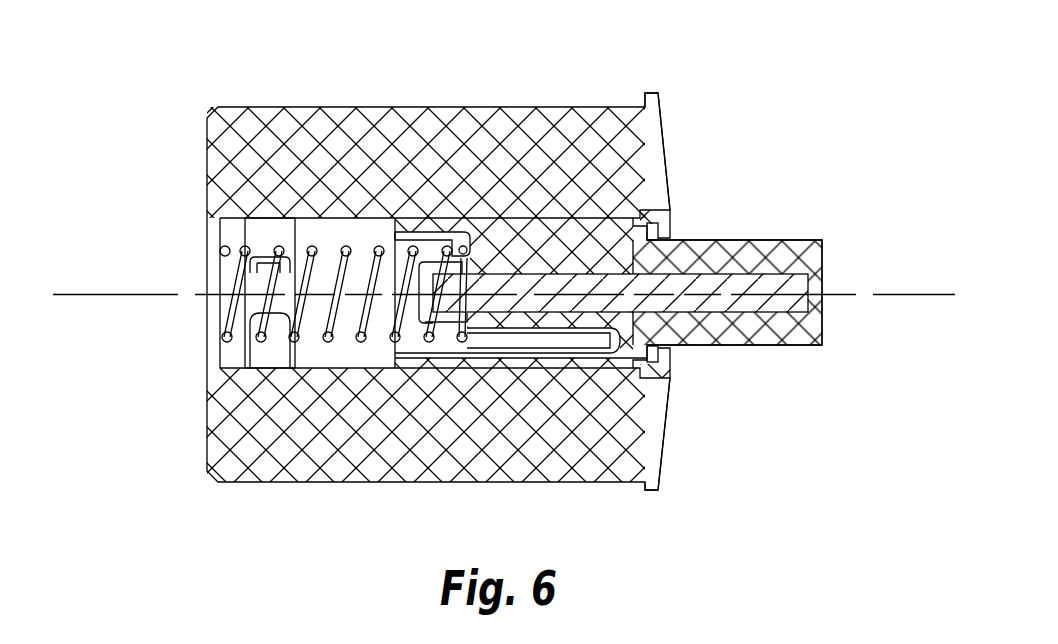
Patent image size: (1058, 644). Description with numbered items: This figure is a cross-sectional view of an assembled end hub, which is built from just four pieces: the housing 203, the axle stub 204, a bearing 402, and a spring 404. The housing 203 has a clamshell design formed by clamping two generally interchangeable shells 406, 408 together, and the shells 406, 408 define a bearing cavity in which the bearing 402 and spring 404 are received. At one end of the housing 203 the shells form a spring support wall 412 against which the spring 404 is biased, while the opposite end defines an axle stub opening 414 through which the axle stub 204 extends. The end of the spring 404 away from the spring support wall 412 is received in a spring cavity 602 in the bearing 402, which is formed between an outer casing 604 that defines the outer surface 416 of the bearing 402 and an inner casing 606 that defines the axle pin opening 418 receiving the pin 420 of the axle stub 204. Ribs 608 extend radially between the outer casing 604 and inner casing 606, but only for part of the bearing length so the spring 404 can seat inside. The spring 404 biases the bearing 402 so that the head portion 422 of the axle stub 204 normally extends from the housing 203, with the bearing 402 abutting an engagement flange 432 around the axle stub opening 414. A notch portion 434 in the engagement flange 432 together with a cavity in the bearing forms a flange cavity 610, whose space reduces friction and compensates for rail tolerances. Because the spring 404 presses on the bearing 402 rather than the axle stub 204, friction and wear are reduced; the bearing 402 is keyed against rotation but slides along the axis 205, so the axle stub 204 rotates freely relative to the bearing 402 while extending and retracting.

The housing 203 is at (306, 432).
The axle stub 204 is at (798, 242).
The axis 205 is at (100, 293).
The bearing 402 is at (413, 224).
The spring 404 is at (242, 265).
The shell 406 is at (230, 432).
The shell 408 is at (247, 127).
The spring support wall 412 is at (206, 336).
The axle stub opening 414 is at (747, 290).
The outer surface 416 is at (661, 124).
The axle pin opening 418 is at (492, 273).
The pin 420 is at (577, 282).
The head portion 422 is at (790, 346).
The engagement flange 432 is at (660, 232).
The notch portion 434 is at (650, 359).
The spring cavity 602 is at (467, 240).
The outer casing 604 is at (452, 358).
The inner casing 606 is at (468, 333).
The ribs 608 is at (583, 250).
The flange cavity 610 is at (664, 352).